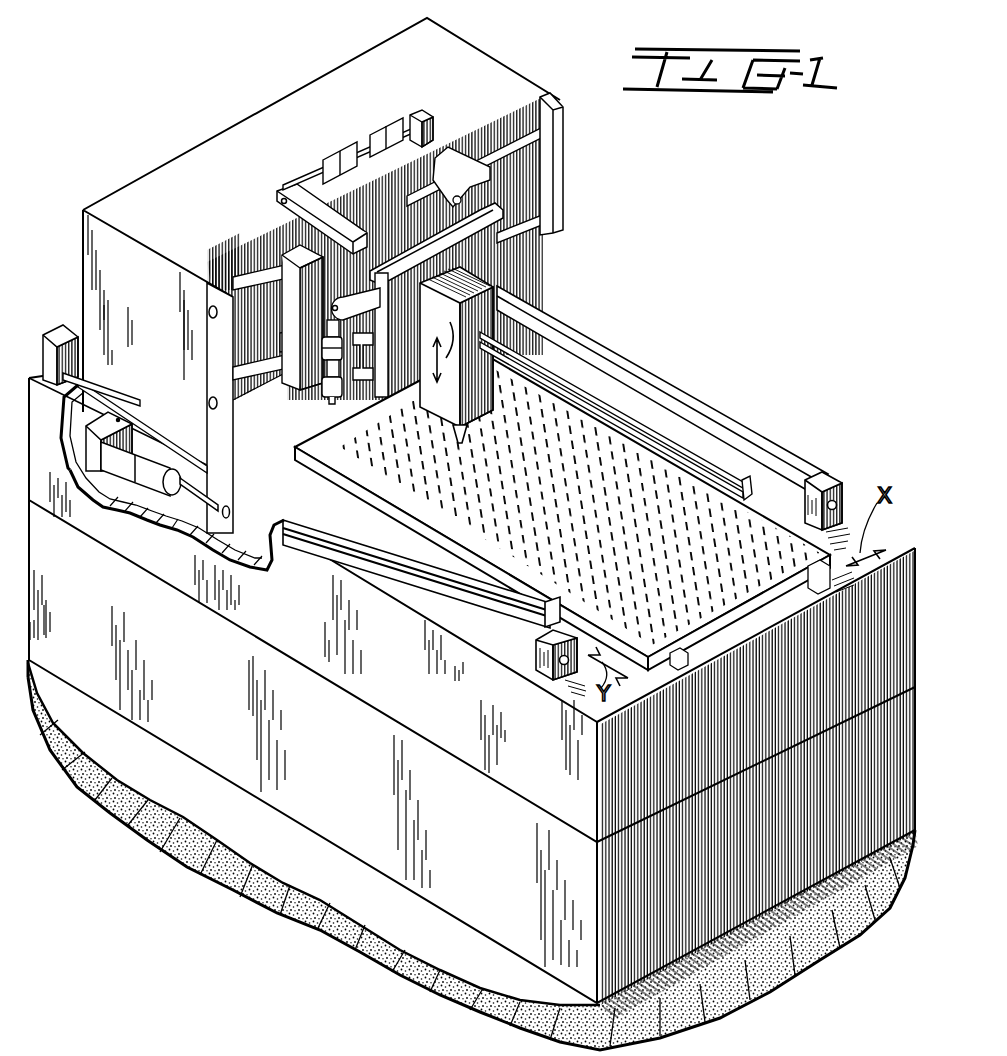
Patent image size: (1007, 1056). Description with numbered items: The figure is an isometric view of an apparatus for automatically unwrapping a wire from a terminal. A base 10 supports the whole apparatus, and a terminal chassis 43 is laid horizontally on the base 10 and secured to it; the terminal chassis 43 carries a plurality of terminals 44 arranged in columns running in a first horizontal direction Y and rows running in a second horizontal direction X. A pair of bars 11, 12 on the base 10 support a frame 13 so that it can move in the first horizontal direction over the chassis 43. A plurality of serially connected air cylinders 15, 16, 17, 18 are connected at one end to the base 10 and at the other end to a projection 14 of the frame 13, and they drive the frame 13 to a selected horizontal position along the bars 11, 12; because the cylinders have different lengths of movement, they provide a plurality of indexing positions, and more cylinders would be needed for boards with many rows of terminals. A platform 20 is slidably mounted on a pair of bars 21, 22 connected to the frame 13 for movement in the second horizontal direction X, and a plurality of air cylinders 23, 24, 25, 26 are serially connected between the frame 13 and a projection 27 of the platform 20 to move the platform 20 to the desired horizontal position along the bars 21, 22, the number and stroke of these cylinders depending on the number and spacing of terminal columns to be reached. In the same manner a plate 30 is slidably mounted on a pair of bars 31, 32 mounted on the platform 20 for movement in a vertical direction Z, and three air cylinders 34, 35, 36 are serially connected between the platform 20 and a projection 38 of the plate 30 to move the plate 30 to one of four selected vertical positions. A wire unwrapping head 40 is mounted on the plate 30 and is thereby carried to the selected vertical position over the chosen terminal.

The base 10 is at (455, 893).
The bar 11 is at (492, 620).
The bar 12 is at (628, 377).
The frame 13 is at (470, 55).
The projection 14 is at (236, 519).
The air cylinder 15 is at (77, 378).
The air cylinder 16 is at (105, 402).
The air cylinder 17 is at (123, 488).
The air cylinder 18 is at (152, 495).
The platform 20 is at (483, 193).
The bar 21 is at (547, 150).
The bar 22 is at (547, 230).
The air cylinder 23 is at (330, 167).
The air cylinder 24 is at (350, 157).
The air cylinder 25 is at (377, 140).
The air cylinder 26 is at (413, 130).
The projection 27 is at (280, 193).
The plate 30 is at (483, 260).
The bar 31 is at (297, 227).
The bar 32 is at (463, 173).
The air cylinder 34 is at (312, 350).
The air cylinder 35 is at (318, 368).
The air cylinder 36 is at (335, 378).
The projection 38 is at (347, 375).
The wire unwrapping head 40 is at (527, 313).
The terminal chassis 43 is at (640, 447).
The terminals 44 is at (724, 488).